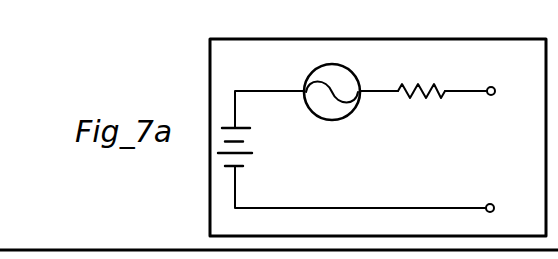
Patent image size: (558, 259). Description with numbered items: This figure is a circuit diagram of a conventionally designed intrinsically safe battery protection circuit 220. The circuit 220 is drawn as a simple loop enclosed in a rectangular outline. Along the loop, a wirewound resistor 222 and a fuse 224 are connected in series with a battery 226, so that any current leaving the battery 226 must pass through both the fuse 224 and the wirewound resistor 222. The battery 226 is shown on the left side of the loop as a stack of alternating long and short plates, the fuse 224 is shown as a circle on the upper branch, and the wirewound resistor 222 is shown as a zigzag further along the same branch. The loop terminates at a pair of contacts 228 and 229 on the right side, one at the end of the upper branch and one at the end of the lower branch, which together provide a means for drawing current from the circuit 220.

The intrinsically safe battery protection circuit 220 is at (482, 22).
The wirewound resistor 222 is at (416, 86).
The fuse 224 is at (349, 113).
The battery 226 is at (252, 139).
The contact 228 is at (513, 70).
The contact 229 is at (515, 195).